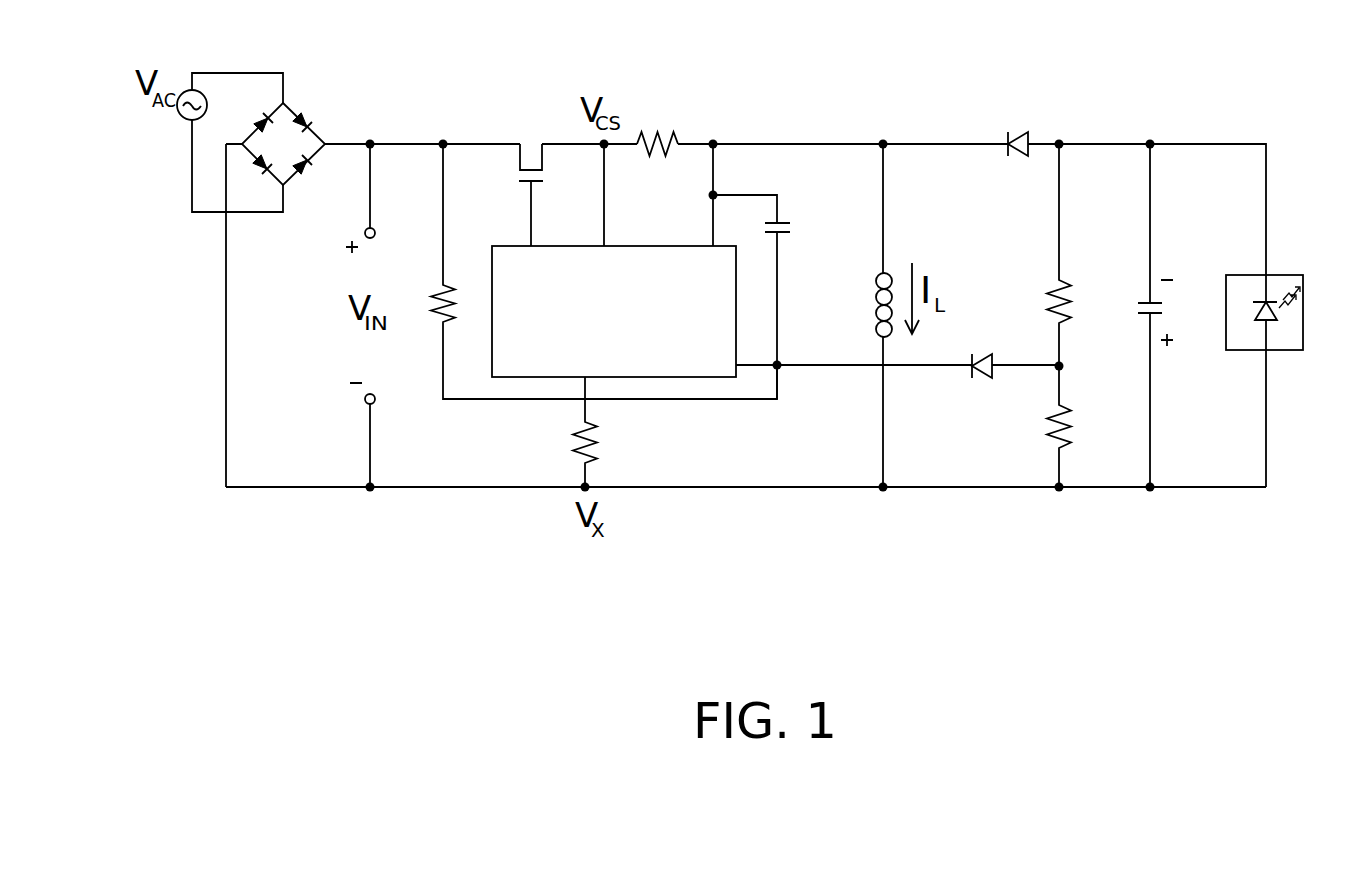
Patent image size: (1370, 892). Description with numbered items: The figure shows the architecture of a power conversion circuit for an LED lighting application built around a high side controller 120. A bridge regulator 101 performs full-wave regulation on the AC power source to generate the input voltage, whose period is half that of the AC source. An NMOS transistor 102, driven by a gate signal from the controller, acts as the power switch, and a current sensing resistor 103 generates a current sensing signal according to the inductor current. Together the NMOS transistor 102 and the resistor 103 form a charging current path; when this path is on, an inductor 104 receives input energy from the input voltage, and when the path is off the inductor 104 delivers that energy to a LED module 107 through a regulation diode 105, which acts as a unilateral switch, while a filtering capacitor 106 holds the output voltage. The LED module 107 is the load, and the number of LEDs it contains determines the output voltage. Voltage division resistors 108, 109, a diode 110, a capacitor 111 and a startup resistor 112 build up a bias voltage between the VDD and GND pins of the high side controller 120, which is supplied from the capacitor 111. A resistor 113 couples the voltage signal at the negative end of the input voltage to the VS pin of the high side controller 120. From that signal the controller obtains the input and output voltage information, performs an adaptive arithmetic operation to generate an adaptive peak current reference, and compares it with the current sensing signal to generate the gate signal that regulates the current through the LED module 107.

The bridge regulator 101 is at (297, 103).
The NMOS transistor 102 is at (531, 148).
The current sensing resistor 103 is at (658, 132).
The inductor 104 is at (887, 278).
The regulation diode 105 is at (1017, 130).
The filtering capacitor 106 is at (1158, 297).
The LED module 107 is at (1287, 285).
The voltage division resistor 108 is at (1047, 298).
The voltage division resistor 109 is at (1068, 417).
The diode 110 is at (982, 380).
The capacitor 111 is at (780, 217).
The startup resistor 112 is at (440, 283).
The resistor 113 is at (598, 445).
The high side controller 120 is at (727, 322).